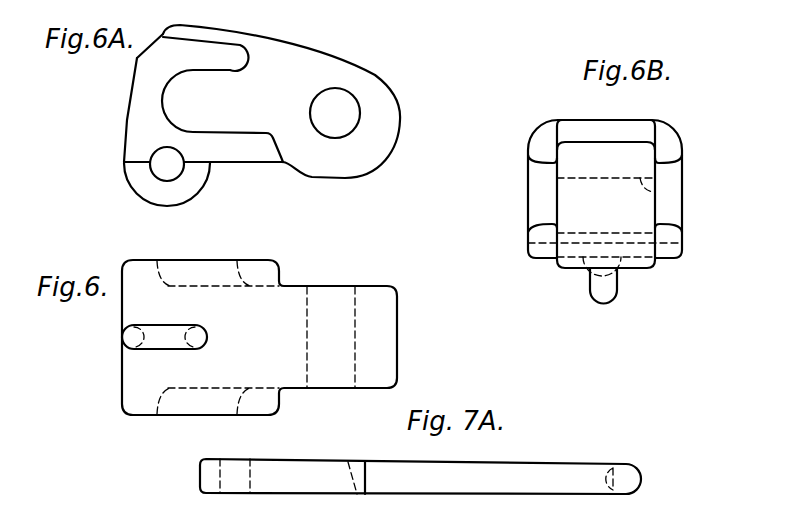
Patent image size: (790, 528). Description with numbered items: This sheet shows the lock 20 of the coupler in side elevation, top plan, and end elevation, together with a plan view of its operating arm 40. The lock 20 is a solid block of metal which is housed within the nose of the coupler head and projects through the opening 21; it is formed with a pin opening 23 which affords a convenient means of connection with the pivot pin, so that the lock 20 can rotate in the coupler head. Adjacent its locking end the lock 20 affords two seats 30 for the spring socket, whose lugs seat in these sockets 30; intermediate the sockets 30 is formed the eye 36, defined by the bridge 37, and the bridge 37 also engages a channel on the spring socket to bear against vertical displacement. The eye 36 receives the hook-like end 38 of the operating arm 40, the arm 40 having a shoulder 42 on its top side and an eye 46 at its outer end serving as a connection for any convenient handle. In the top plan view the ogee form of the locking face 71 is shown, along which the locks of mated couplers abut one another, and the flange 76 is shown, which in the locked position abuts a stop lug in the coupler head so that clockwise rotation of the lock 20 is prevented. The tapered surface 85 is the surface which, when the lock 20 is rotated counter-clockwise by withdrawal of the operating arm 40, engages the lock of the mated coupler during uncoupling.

In FIG. 6A, the lock 20 is at (382, 167).
In FIG. 6B, the lock 20 is at (527, 233).
In FIG. 6, the lock 20 is at (398, 316).
In FIG. 6B, the opening 21 is at (657, 192).
In FIG. 6A, the pin opening 23 is at (350, 136).
In FIG. 6, the pin opening 23 is at (309, 312).
In FIG. 6A, the seat 30 is at (150, 168).
In FIG. 6, the seat 30 is at (180, 270).
In FIG. 6A, the eye 36 is at (181, 157).
In FIG. 6B, the eye 36 is at (588, 277).
In FIG. 6, the eye 36 is at (148, 349).
In FIG. 6A, the bridge 37 is at (155, 197).
In FIG. 6B, the bridge 37 is at (612, 300).
In FIG. 6, the bridge 37 is at (174, 343).
In FIG. 7A, the hook-like end 38 is at (641, 479).
In FIG. 7A, the operating arm 40 is at (311, 470).
In FIG. 7A, the shoulder 42 is at (366, 475).
In FIG. 7A, the eye 46 is at (221, 475).
In FIG. 6A, the locking face 71 is at (133, 100).
In FIG. 6A, the flange 76 is at (243, 140).
In FIG. 6A, the tapered surface 85 is at (156, 40).